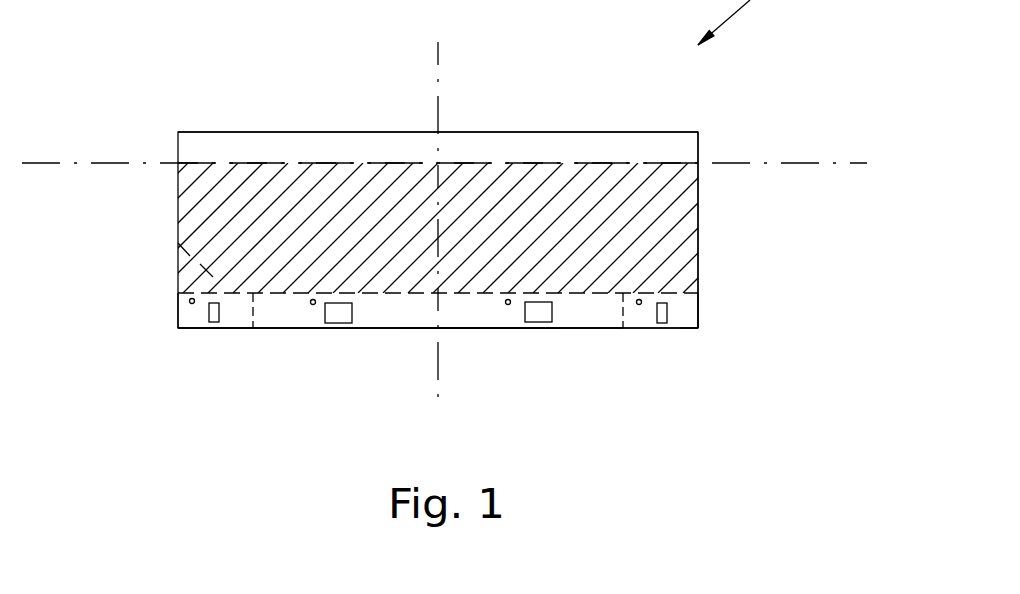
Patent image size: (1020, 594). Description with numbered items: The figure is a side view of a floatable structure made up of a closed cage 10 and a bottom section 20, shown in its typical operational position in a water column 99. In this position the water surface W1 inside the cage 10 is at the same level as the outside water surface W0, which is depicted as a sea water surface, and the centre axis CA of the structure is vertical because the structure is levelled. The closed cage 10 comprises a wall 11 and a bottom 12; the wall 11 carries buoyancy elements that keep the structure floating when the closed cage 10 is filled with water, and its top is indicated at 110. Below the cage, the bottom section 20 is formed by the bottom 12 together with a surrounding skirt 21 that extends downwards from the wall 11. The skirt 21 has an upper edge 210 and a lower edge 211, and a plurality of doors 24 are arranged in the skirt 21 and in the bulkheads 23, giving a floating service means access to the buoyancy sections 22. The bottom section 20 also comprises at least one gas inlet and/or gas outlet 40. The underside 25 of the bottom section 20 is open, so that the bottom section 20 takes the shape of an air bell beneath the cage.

The closed cage 10 is at (662, 190).
The top surface of wafer 110 is at (230, 132).
The wall 11 is at (698, 230).
The bottom 12 is at (177, 242).
The bottom section 20 is at (588, 313).
The upper edge 210 is at (698, 293).
The skirt 21 is at (698, 313).
The lower edge 211 is at (698, 328).
The buoyancy sections 22 is at (190, 315).
The bulkheads 23 is at (252, 313).
The doors 24 is at (538, 313).
The underside 25 is at (485, 328).
The gas inlet and/or gas outlet 40 is at (190, 303).
The water column 99 is at (102, 240).
The outside water surface W0 is at (817, 162).
The water surface inside the cage W1 is at (552, 165).
The centre axis CA is at (438, 82).